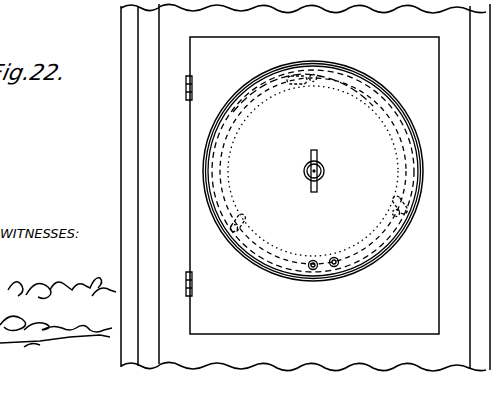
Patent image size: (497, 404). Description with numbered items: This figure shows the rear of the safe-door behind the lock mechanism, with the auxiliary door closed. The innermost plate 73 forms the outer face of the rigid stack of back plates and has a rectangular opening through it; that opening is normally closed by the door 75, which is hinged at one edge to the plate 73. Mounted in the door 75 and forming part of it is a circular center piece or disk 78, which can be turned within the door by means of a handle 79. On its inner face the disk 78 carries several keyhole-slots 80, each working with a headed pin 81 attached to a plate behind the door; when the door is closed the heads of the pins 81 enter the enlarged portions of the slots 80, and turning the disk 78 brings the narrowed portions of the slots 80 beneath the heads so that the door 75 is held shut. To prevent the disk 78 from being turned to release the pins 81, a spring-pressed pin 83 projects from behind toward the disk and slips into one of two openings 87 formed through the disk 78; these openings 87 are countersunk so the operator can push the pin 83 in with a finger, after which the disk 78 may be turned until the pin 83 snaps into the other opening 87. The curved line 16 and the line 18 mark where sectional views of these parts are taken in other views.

The innermost plate 73 is at (305, 187).
The door 75 is at (312, 185).
The circular center piece or disk 78 is at (313, 171).
The handle 79 is at (320, 160).
The keyhole-slots 80 is at (390, 212).
The headed pins 81 is at (392, 220).
The pin 83 is at (312, 261).
The openings 87 is at (335, 266).
The section line 16 16 is at (372, 244).
The section line 18 18 is at (346, 82).